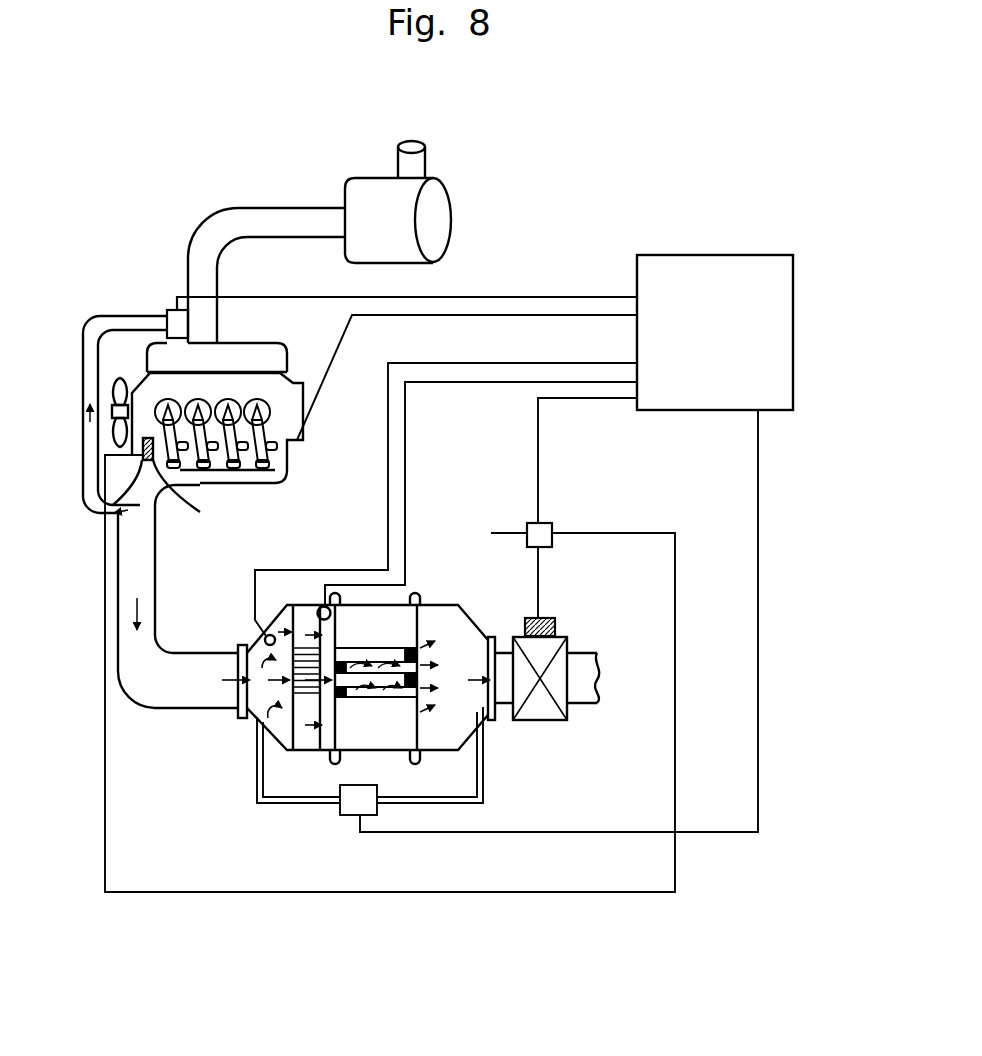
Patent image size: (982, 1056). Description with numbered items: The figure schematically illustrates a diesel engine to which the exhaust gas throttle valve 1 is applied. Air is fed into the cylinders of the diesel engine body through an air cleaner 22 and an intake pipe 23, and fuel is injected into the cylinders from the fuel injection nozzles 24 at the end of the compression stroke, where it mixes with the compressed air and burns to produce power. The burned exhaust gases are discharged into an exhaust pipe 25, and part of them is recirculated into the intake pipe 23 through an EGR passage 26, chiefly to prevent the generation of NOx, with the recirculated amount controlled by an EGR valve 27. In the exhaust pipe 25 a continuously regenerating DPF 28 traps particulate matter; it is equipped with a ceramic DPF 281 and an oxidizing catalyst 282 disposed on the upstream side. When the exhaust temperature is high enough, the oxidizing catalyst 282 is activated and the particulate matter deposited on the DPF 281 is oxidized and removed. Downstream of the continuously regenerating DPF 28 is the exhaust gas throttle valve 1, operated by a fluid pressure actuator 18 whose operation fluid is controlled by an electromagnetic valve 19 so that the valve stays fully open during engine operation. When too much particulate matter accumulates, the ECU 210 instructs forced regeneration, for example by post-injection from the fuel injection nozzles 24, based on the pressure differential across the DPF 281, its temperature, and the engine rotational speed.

The exhaust gas throttle valve 1 is at (545, 724).
The fluid pressure actuator 18 is at (556, 628).
The electromagnetic valve 19 is at (552, 526).
The air cleaner 22 is at (380, 182).
The intake pipe 23 is at (208, 214).
The fuel injection nozzles 24 is at (258, 436).
The exhaust pipe 25 is at (156, 557).
The EGR passage 26 is at (81, 445).
The EGR valve 27 is at (170, 310).
The continuously regenerating DPF 28 is at (347, 629).
The ceramic DPF 281 is at (354, 626).
The oxidizing catalyst 282 is at (292, 704).
The ECU 210 is at (784, 295).